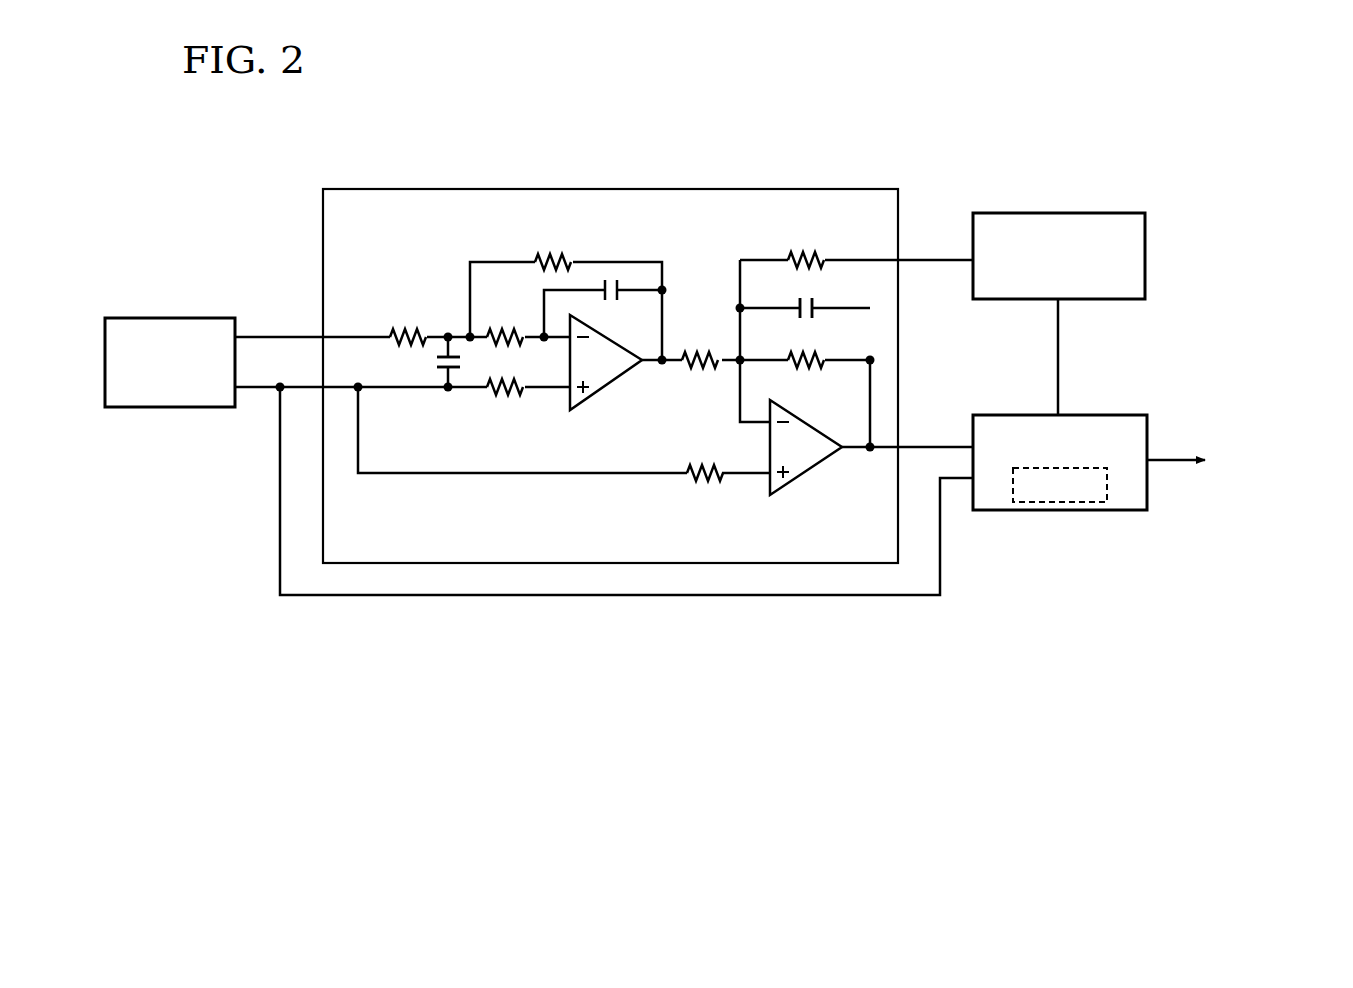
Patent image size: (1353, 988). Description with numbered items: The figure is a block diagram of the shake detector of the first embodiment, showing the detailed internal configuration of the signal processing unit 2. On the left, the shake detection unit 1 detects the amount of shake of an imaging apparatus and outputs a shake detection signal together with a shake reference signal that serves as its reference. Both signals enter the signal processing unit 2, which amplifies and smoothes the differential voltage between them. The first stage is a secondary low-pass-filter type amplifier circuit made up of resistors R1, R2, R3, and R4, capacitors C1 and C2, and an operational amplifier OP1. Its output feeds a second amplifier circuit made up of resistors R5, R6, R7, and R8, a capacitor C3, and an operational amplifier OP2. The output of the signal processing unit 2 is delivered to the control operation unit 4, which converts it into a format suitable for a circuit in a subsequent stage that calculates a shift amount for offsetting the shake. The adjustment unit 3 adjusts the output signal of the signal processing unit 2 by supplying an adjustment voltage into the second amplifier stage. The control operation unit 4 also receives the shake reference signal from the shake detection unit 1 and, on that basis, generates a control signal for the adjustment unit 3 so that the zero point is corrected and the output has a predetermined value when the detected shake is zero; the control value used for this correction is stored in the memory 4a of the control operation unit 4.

The shake detection unit 1 is at (170, 318).
The signal processing unit 2 is at (700, 189).
The adjustment unit 3 is at (1097, 213).
The control operation unit 4 is at (1163, 469).
The memory 4a is at (1058, 503).
The resistor R1 is at (408, 326).
The resistor R2 is at (505, 326).
The resistor R3 is at (553, 250).
The resistor R4 is at (505, 375).
The resistor R5 is at (700, 348).
The resistor R6 is at (806, 348).
The resistor R7 is at (705, 460).
The resistor R8 is at (806, 248).
The capacitor C1 is at (433, 366).
The capacitor C2 is at (612, 307).
The capacitor C3 is at (806, 296).
The operational amplifier OP1 is at (606, 362).
The operational amplifier OP2 is at (806, 447).